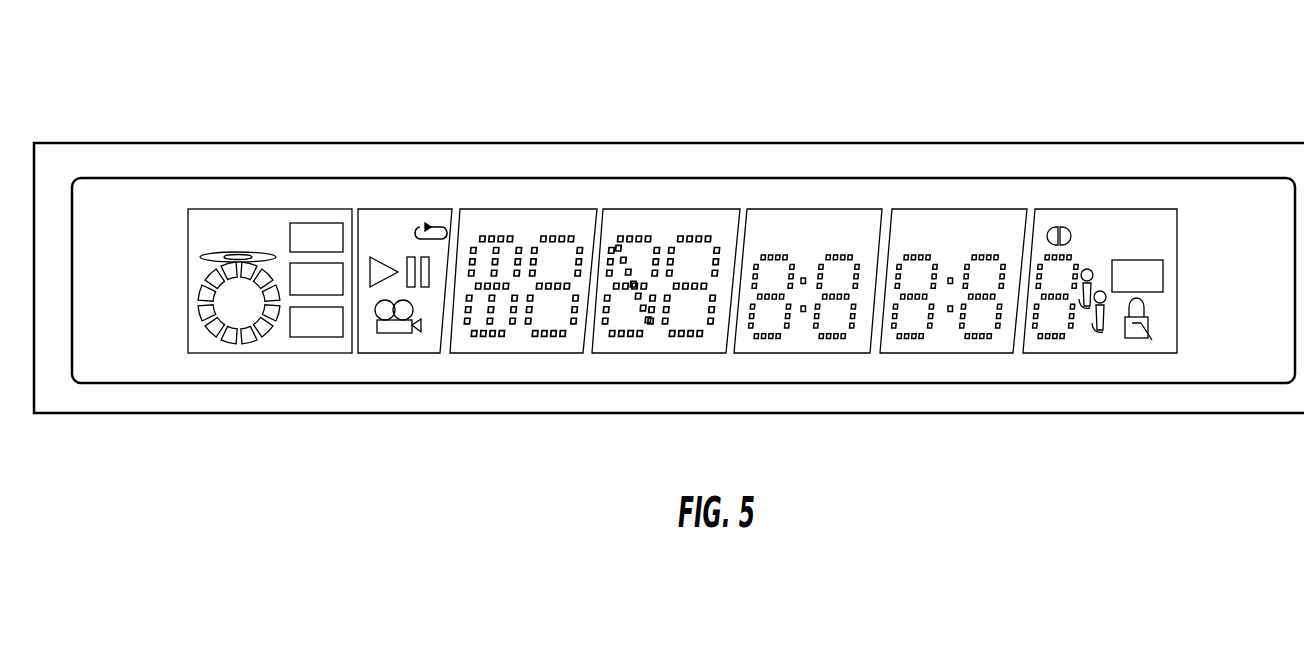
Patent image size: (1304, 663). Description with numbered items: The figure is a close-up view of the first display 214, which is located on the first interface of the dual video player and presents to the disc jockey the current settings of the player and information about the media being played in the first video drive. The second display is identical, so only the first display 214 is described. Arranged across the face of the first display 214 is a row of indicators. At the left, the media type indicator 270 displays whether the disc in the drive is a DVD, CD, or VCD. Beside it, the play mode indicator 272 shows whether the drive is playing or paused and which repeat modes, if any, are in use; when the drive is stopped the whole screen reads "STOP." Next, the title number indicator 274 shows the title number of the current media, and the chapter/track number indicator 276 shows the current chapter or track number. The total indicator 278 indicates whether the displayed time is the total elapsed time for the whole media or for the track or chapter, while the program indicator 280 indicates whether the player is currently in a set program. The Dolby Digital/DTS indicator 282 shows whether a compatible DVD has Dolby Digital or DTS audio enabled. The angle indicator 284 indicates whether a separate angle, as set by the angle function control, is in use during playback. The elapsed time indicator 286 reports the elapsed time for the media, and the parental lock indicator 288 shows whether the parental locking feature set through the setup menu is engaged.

The first display 214 is at (414, 388).
The media type indicator 270 is at (287, 220).
The play mode indicator 272 is at (402, 227).
The title number indicator 274 is at (527, 227).
The chapter/track number indicator 276 is at (663, 227).
The total indicator 278 is at (803, 217).
The program indicator 280 is at (949, 217).
The Dolby Digital/DTS indicator 282 is at (1165, 220).
The angle indicator 284 is at (1042, 337).
The elapsed time indicator 286 is at (827, 338).
The parental lock indicator 288 is at (1148, 337).